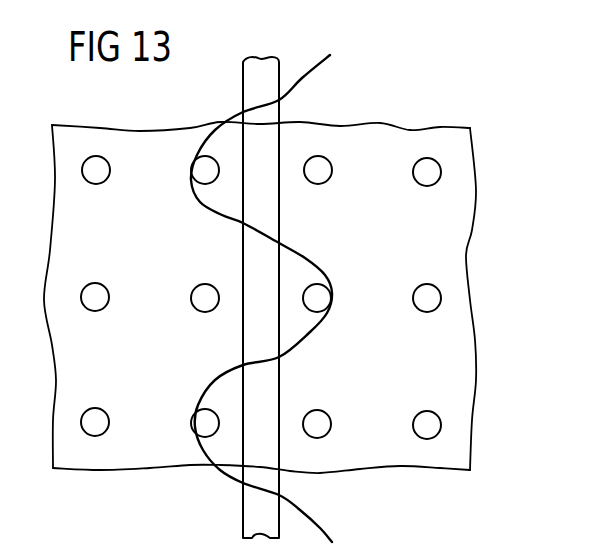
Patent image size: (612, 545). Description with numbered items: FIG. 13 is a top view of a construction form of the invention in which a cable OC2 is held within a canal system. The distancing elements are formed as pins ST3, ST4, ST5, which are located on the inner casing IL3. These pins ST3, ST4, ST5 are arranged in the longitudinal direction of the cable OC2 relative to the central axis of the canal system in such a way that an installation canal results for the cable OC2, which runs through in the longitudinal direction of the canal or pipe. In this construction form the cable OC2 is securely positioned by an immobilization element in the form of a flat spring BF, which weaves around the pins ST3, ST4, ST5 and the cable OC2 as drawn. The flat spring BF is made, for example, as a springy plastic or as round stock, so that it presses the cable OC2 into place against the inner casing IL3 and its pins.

The flat spring BF is at (308, 88).
The pin ST3 is at (194, 184).
The pin ST4 is at (323, 296).
The pin ST5 is at (200, 423).
The cable OC2 is at (272, 398).
The inner casing IL3 is at (455, 367).